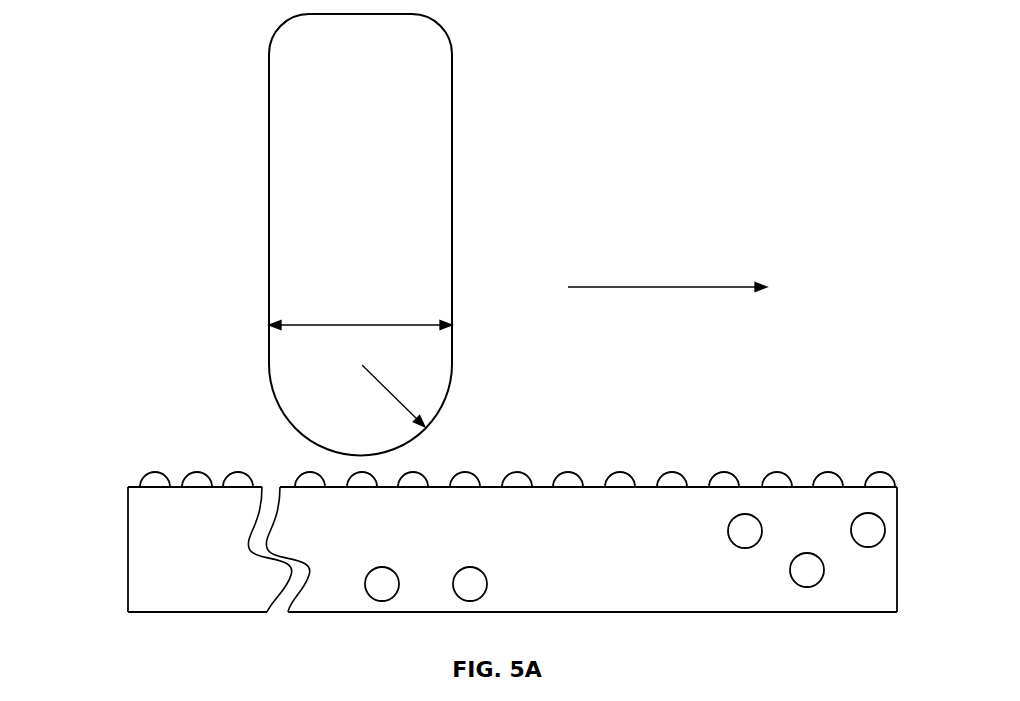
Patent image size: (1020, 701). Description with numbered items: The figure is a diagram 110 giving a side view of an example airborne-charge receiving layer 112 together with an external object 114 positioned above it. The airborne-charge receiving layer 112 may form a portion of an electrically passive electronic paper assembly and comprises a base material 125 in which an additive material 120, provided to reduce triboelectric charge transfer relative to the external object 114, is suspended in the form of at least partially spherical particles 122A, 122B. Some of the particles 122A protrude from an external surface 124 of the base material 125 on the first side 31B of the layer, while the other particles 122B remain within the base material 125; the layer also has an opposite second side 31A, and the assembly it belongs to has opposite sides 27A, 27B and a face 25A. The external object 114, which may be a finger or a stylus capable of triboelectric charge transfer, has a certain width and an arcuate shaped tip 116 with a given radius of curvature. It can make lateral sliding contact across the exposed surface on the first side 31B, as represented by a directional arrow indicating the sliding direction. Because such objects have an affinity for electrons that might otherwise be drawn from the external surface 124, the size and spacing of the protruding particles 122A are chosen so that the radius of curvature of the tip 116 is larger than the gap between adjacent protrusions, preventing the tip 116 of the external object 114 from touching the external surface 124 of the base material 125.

The diagram 110 is at (82, 131).
The external object 114 is at (258, 153).
The arcuate shaped tip 116 is at (277, 400).
The airborne-charge receiving layer 112 is at (135, 478).
The base material 125 is at (608, 592).
The additive material 120 is at (569, 465).
The external surface 124 is at (490, 482).
The particles 122A is at (622, 472).
The particles 122B is at (795, 580).
The second side 31A is at (718, 612).
The first side 31B is at (772, 452).
The face 25A is at (845, 441).
The side 27A is at (128, 550).
The side 27B is at (898, 567).